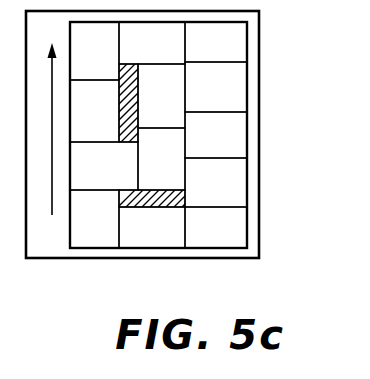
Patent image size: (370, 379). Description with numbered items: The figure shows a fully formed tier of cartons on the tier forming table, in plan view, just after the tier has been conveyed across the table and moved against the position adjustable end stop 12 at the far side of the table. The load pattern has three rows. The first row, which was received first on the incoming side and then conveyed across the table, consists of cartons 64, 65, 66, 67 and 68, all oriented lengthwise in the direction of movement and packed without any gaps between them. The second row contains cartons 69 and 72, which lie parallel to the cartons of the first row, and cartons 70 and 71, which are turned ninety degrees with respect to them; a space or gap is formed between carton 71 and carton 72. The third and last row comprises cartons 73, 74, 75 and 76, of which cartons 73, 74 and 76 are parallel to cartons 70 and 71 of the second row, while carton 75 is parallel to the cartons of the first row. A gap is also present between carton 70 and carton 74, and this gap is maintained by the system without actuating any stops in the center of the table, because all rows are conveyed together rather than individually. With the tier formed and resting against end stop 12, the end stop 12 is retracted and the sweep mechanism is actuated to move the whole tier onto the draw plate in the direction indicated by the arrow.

The end stop 12 is at (250, 85).
The carton 64 is at (216, 42).
The carton 65 is at (216, 87).
The carton 66 is at (216, 135).
The carton 67 is at (216, 182).
The carton 68 is at (216, 227).
The carton 69 is at (152, 43).
The carton 70 is at (161, 96).
The carton 71 is at (161, 159).
The carton 72 is at (152, 227).
The carton 73 is at (94, 51).
The carton 74 is at (94, 111).
The carton 75 is at (104, 166).
The carton 76 is at (94, 219).